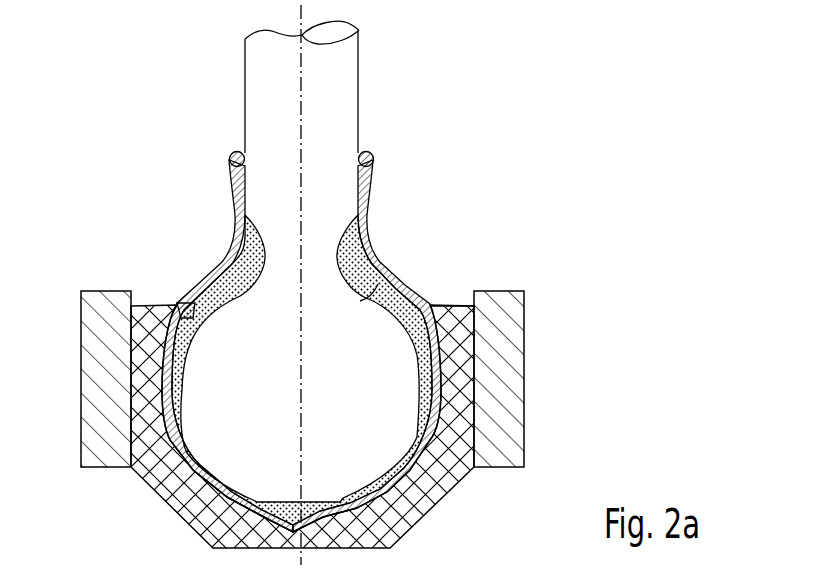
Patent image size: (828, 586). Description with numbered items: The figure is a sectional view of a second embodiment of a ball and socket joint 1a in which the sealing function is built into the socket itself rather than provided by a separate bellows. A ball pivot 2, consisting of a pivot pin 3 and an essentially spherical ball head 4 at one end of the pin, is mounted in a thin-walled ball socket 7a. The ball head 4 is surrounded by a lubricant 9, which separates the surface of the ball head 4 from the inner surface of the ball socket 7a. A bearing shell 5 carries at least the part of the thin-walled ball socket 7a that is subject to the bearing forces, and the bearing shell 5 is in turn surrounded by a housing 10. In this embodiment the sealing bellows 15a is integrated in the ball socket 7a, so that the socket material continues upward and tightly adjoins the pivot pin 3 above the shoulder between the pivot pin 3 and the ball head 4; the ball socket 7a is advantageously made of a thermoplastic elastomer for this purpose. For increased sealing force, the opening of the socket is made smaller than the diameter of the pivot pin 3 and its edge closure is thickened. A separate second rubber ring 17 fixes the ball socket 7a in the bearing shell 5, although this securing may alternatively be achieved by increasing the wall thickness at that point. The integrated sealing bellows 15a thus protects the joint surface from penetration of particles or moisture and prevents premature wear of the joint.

The ball and socket joint 1a is at (422, 34).
The ball pivot 2 is at (253, 52).
The pivot pin 3 is at (350, 104).
The ball head 4 is at (378, 274).
The bearing shell 5 is at (425, 497).
The ball socket 7a is at (202, 502).
The lubricant 9 is at (233, 258).
The housing 10 is at (518, 376).
The sealing bellows 15a is at (237, 172).
The second rubber ring 17 is at (425, 304).